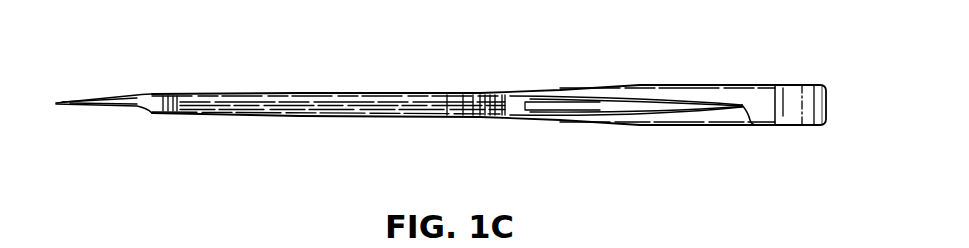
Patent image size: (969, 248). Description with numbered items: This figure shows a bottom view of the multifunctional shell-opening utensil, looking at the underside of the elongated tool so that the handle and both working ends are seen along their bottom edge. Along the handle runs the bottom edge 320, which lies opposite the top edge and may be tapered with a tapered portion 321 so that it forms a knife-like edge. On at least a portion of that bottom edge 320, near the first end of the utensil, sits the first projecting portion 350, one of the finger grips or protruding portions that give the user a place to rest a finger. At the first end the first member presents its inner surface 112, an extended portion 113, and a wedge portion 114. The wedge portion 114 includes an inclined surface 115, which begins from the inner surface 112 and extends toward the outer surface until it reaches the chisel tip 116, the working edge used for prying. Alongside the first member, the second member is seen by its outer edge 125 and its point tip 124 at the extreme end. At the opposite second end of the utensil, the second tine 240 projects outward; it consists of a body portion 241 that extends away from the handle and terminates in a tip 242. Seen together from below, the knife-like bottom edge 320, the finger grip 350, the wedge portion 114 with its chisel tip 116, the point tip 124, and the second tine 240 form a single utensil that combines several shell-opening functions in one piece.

The inner surface 112 is at (660, 125).
The extended portion 113 is at (705, 84).
The wedge portion 114 is at (797, 138).
The inclined surface 115 is at (782, 88).
The chisel tip 116 is at (827, 118).
The point tip 124 is at (740, 122).
The outer edge 125 is at (598, 110).
The second tine 240 is at (94, 108).
The body portion 241 is at (82, 108).
The tip 242 is at (55, 100).
The bottom edge 320 is at (225, 110).
The tapered portion 321 is at (320, 106).
The first projecting portion 350 is at (485, 112).